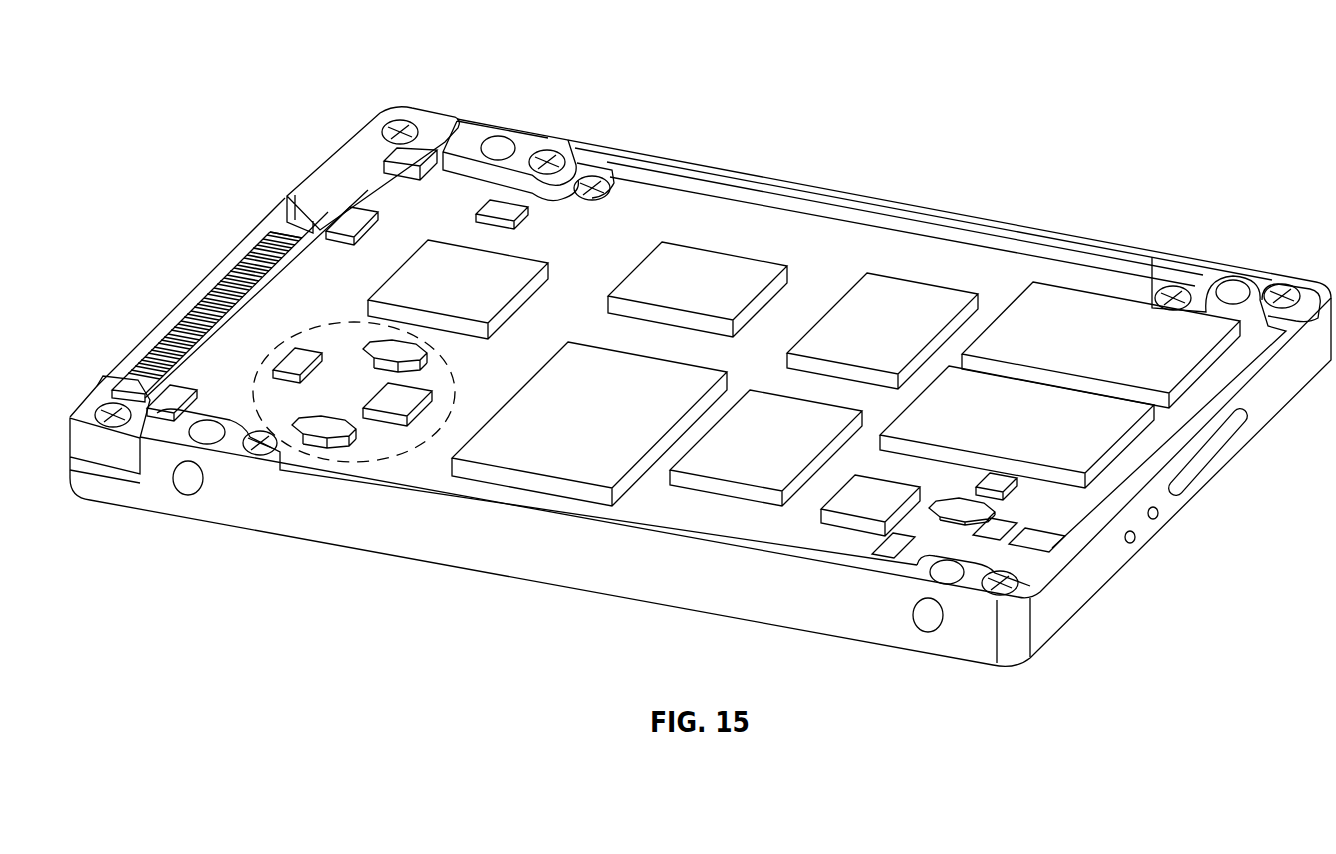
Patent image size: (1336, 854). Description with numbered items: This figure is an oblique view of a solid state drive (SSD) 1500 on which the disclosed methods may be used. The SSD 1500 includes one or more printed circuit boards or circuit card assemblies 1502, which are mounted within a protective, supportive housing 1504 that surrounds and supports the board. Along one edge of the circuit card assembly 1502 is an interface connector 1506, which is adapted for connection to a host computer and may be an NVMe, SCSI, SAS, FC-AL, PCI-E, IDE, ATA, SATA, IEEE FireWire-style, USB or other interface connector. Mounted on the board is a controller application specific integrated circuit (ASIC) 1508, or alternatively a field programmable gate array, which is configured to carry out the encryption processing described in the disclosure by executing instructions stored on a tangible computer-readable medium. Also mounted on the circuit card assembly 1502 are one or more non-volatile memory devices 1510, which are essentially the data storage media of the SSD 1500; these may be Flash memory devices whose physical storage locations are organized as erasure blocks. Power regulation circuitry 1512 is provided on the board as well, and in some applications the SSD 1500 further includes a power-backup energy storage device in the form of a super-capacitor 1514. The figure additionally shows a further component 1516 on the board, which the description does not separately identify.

The solid state drive 1500 is at (1180, 88).
The circuit card assembly 1502 is at (797, 230).
The housing 1504 is at (403, 538).
The interface connector 1506 is at (166, 334).
The controller ASIC 1508 is at (430, 268).
The non-volatile memory devices 1510 is at (1115, 318).
The power regulation circuitry 1512 is at (309, 326).
The super-capacitor 1514 is at (590, 490).
The integrated circuit chip 1516 is at (685, 258).